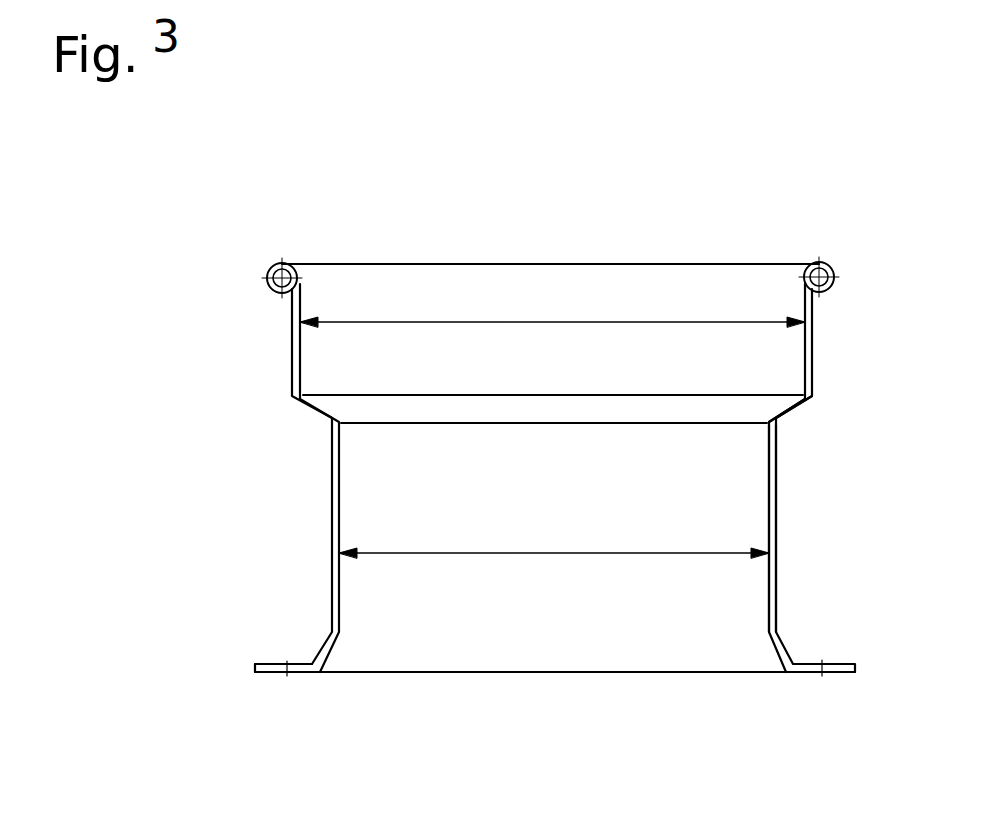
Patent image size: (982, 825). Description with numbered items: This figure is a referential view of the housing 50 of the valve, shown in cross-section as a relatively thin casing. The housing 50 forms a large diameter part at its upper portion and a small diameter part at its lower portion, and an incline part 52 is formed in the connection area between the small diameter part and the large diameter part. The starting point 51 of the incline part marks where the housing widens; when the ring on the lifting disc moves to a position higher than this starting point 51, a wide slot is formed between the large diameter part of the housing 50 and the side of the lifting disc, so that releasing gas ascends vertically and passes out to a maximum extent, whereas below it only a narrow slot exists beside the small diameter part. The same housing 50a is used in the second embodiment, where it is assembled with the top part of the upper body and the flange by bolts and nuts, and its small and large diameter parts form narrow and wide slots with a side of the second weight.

The housing 50 is at (213, 490).
The housing 50a is at (176, 600).
The starting point of incline part 51 is at (761, 419).
The incline part 52 is at (783, 405).